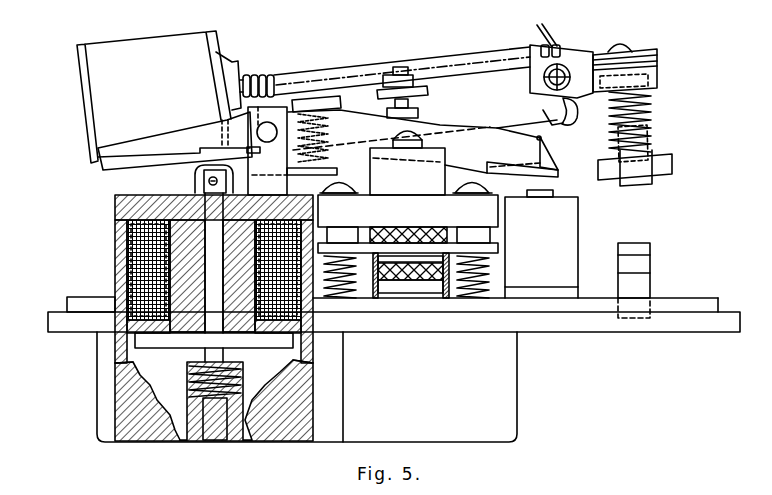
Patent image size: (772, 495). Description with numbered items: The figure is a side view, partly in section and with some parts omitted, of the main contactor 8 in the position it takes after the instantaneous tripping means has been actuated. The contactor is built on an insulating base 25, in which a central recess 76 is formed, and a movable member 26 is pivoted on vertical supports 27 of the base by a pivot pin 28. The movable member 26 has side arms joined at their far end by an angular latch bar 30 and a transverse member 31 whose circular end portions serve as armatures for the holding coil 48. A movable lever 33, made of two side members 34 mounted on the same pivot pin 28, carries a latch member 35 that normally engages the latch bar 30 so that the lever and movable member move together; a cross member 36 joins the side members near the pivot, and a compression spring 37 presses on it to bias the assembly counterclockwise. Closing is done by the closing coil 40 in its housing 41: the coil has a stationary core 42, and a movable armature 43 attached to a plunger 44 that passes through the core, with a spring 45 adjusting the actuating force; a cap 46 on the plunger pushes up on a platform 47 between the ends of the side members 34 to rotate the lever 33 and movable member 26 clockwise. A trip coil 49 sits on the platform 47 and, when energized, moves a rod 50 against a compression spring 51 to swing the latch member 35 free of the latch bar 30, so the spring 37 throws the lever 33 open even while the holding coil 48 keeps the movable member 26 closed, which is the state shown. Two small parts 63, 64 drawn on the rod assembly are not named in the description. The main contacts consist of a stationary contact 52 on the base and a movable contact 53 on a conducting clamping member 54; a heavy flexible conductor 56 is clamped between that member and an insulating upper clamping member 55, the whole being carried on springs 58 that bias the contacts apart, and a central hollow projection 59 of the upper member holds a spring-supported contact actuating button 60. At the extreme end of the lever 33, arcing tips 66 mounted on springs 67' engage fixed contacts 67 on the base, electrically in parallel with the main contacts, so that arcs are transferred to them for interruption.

The main contactor 8 is at (561, 406).
The insulating base 25 is at (57, 312).
The movable member 26 is at (477, 165).
The vertical supports 27 is at (278, 185).
The pivot pin 28 is at (272, 142).
The angular latch bar 30 is at (557, 163).
The transverse member 31 is at (555, 178).
The movable lever 33 is at (576, 149).
The side members 34 is at (580, 68).
The latch member 35 is at (575, 99).
The cross member 36 is at (341, 98).
The compression spring 37 is at (326, 158).
The closing coil 40 is at (137, 252).
The housing 41 is at (117, 276).
The stationary core 42 is at (180, 333).
The movable armature 43 is at (135, 384).
The plunger 44 is at (210, 318).
The spring 45 is at (267, 392).
The cap 46 is at (195, 178).
The platform 47 is at (100, 168).
The holding coil 48 is at (572, 230).
The trip coil 49 is at (144, 38).
The rod 50 is at (353, 75).
The compression spring 51 is at (253, 75).
The stationary contact 52 is at (373, 297).
The movable contact 53 is at (447, 297).
The conducting clamping member 54 is at (498, 251).
The upper clamping member 55 is at (492, 217).
The flexible conductor 56 is at (403, 233).
The springs 58 is at (492, 279).
The central hollow projection 59 is at (440, 160).
The contact actuating button 60 is at (395, 140).
The plate 63 is at (420, 110).
The nut 64 is at (422, 92).
The arcing tips 66 is at (653, 183).
The fixed contacts 67 is at (650, 280).
The springs 67' is at (647, 127).
The central recess 76 is at (508, 378).